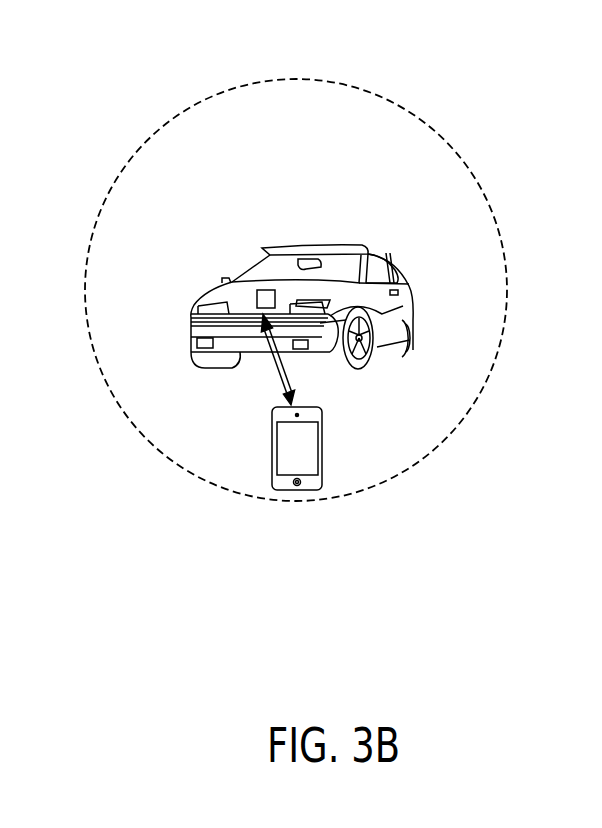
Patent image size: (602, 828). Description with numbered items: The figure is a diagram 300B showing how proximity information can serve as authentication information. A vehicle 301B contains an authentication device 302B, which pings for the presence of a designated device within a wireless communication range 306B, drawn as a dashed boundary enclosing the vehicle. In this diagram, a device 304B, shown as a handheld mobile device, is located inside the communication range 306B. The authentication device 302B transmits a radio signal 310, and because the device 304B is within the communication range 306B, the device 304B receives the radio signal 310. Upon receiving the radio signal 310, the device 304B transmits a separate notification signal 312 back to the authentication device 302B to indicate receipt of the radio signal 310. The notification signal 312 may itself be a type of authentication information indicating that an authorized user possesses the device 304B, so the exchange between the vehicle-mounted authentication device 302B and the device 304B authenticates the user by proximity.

The diagram 300B is at (97, 104).
The vehicle 301B is at (308, 248).
The authentication device 302B is at (267, 290).
The device 304B is at (322, 442).
The communication range 306B is at (500, 343).
The radio signal 310 is at (295, 372).
The notification signal 312 is at (268, 372).